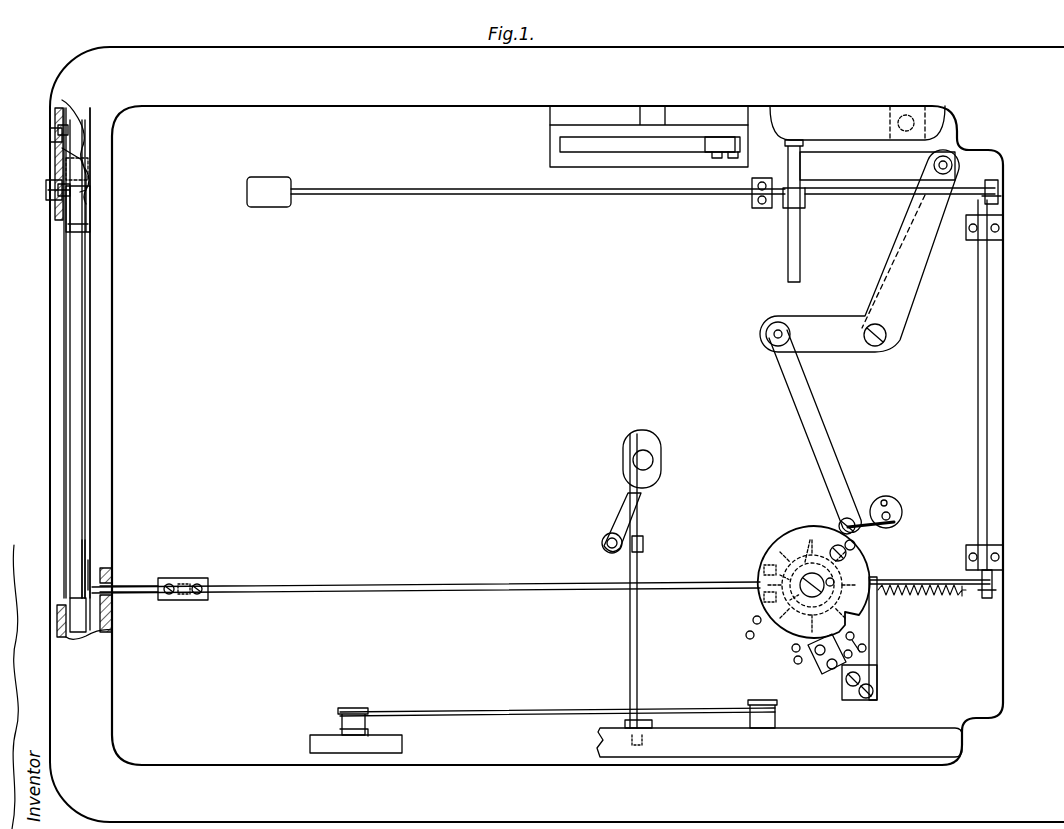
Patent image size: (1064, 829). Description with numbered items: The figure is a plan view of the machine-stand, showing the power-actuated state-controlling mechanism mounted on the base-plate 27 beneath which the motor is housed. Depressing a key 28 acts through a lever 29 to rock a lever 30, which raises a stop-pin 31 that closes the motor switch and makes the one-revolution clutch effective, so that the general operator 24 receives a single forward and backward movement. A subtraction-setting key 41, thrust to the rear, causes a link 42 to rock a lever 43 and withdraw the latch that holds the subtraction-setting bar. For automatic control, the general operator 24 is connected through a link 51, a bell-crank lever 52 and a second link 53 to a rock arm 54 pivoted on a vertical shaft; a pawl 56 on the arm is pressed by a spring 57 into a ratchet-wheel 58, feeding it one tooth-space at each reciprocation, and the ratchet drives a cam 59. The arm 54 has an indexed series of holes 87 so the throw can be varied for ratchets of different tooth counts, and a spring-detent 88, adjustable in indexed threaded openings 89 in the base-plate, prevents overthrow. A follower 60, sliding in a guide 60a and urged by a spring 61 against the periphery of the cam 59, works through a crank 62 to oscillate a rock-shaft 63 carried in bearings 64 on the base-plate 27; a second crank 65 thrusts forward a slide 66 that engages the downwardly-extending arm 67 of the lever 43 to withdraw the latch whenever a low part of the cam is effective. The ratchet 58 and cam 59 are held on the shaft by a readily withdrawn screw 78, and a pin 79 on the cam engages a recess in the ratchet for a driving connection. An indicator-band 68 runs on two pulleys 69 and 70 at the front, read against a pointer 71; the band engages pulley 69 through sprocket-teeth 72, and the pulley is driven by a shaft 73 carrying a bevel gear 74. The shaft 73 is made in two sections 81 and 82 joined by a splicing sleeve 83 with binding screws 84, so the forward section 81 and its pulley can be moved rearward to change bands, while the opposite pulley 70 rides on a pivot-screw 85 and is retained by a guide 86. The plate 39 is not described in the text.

The general operator 24 is at (752, 146).
The base-plate 27 is at (170, 199).
The key 28 is at (322, 735).
The lever 29 is at (482, 710).
The lever 30 is at (638, 666).
The stop-pin 31 is at (653, 460).
The plate 39 is at (652, 732).
The subtraction-setting key 41 is at (284, 178).
The link 42 is at (458, 189).
The lever 43 is at (790, 206).
The link 51 is at (865, 156).
The bell-crank lever 52 is at (859, 251).
The second link 53 is at (812, 402).
The rock arm 54 is at (888, 494).
The pawl 56 is at (856, 574).
The spring 57 is at (848, 556).
The ratchet-wheel 58 is at (804, 540).
The cam 59 is at (784, 534).
The follower 60 is at (926, 582).
The guide 60a is at (878, 646).
The spring 61 is at (928, 596).
The crank 62 is at (984, 592).
The rock-shaft 63 is at (978, 398).
The bearings 64 is at (1003, 224).
The second crank 65 is at (1000, 198).
The slide 66 is at (858, 194).
The downwardly-extending arm 67 is at (752, 196).
The indicator-band 68 is at (70, 437).
The pulley 69 is at (88, 570).
The pulley 70 is at (90, 215).
The pointer 71 is at (102, 393).
The sprocket-teeth 72 is at (70, 626).
The shaft 73 is at (236, 599).
The bevel gear 74 is at (790, 568).
The screw 78 is at (796, 600).
The pin 79 is at (834, 586).
The shaft-section 81 is at (130, 586).
The shaft-section 82 is at (344, 586).
The splicing sleeve 83 is at (180, 578).
The binding screws 84 is at (196, 596).
The pivot-screw 85 is at (46, 190).
The guide 86 is at (74, 150).
The holes 87 is at (893, 522).
The spring-detent 88 is at (800, 630).
The indexed threaded openings 89 is at (795, 662).